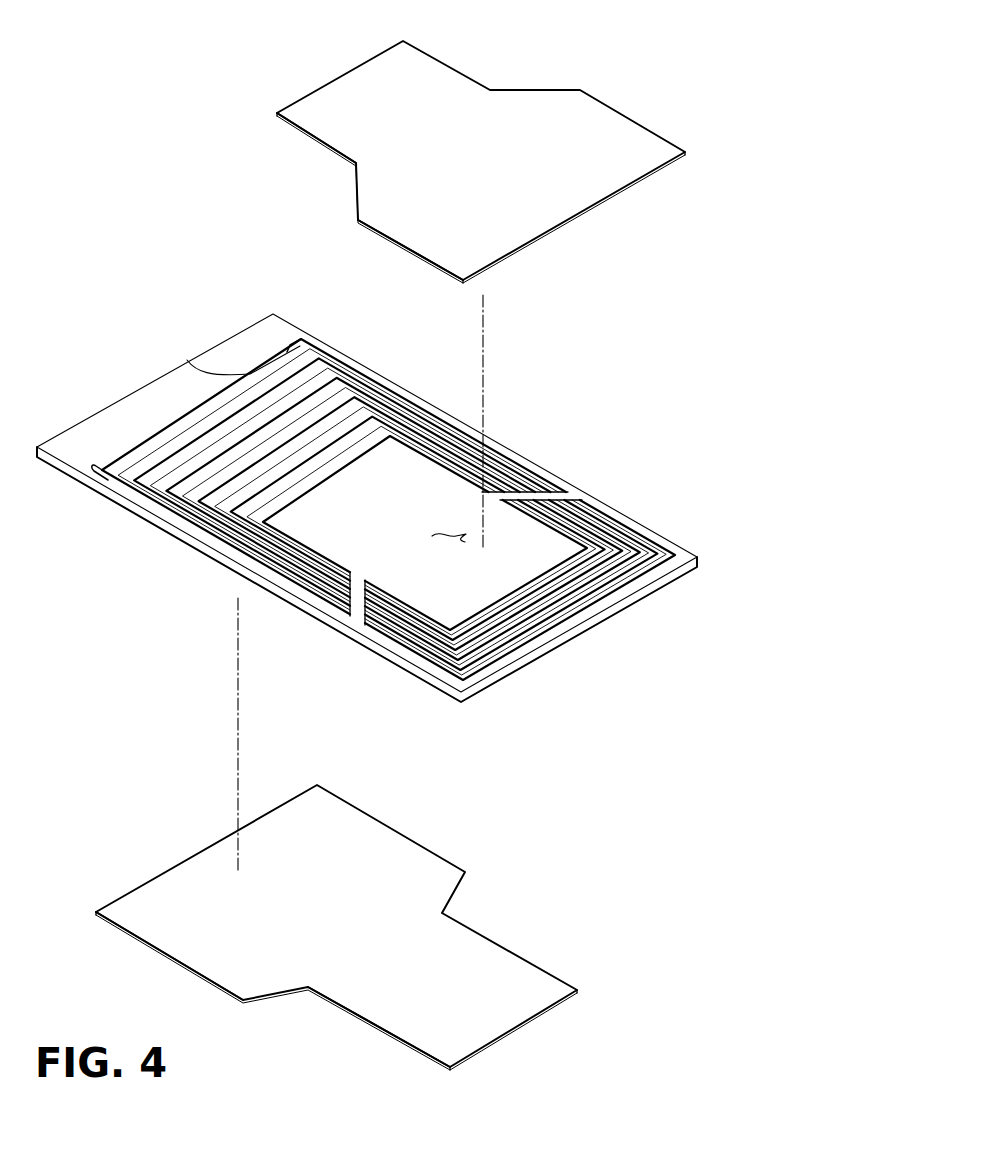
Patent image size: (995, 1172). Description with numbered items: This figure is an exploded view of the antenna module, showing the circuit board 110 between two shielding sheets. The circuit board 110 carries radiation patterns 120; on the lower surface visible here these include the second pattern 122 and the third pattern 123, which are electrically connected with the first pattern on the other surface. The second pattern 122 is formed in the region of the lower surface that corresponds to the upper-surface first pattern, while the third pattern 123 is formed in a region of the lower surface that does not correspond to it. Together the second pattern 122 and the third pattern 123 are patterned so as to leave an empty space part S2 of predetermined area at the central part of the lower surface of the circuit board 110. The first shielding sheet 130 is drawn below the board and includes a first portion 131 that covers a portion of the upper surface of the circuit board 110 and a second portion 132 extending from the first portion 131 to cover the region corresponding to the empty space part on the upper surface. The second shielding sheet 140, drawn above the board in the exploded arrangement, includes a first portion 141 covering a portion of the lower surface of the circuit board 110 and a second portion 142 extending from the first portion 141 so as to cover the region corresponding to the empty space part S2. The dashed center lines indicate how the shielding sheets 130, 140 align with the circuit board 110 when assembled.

The circuit board 110 is at (680, 578).
The radiation patterns 120 is at (379, 495).
The second pattern 122 is at (620, 528).
The third pattern 123 is at (327, 420).
The empty space part S2 is at (457, 533).
The first shielding sheet 130 is at (450, 846).
The first portion 131 is at (193, 947).
The second portion 132 is at (383, 1010).
The second shielding sheet 140 is at (618, 100).
The first portion 141 is at (403, 213).
The second portion 142 is at (318, 122).